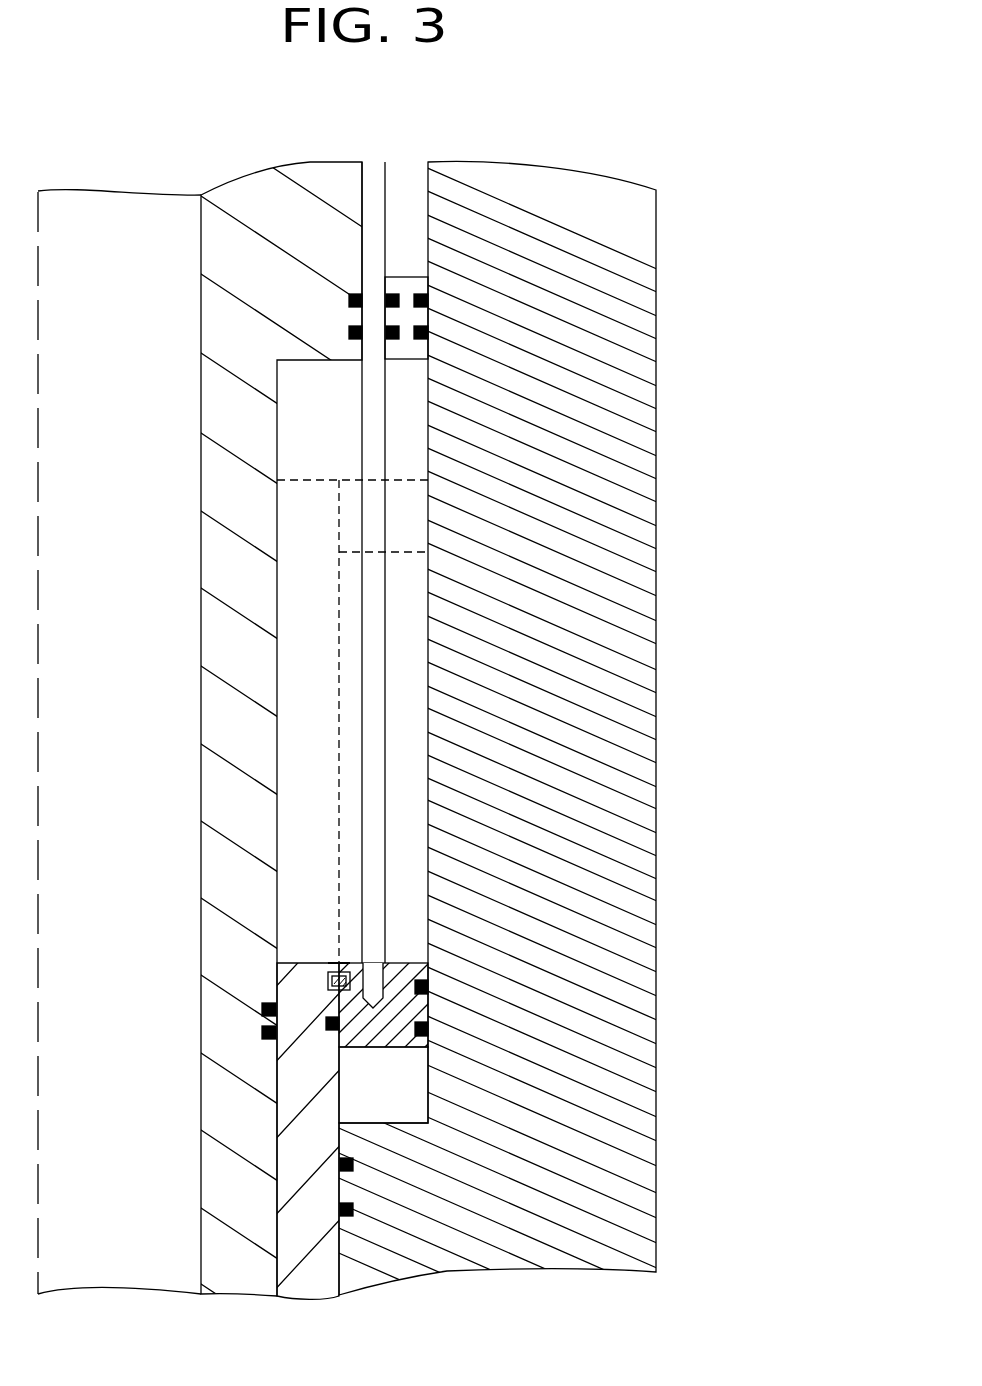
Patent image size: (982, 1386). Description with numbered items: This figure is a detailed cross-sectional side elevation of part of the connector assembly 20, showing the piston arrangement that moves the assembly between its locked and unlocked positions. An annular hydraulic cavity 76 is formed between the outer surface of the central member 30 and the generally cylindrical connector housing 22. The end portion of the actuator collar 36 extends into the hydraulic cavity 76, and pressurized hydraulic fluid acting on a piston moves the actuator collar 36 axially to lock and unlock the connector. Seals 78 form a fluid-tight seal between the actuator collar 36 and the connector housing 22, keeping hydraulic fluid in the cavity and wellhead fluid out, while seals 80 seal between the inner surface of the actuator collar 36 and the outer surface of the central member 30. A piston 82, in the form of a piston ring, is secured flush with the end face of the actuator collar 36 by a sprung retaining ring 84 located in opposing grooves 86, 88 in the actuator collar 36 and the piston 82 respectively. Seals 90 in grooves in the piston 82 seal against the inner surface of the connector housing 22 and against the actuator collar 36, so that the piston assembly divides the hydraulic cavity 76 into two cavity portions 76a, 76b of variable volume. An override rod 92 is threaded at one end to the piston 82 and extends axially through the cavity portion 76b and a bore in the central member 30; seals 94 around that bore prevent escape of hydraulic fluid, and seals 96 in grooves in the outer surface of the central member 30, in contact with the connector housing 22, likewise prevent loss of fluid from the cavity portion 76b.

The connector assembly 20 is at (736, 470).
The connector housing 22 is at (628, 598).
The central member 30 is at (257, 1228).
The actuator collar 36 is at (287, 1157).
The hydraulic cavity 76 is at (428, 765).
The cavity portion 76a is at (428, 1103).
The cavity portion 76b is at (428, 443).
The seals 78 is at (353, 1166).
The seals 80 is at (262, 1010).
The piston 82 is at (392, 1045).
The sprung retaining ring 84 is at (327, 966).
The groove 86 is at (333, 962).
The groove 88 is at (392, 960).
The seals 90 is at (327, 1025).
The override rod 92 is at (365, 663).
The seals 94 is at (348, 303).
The seals 96 is at (428, 333).